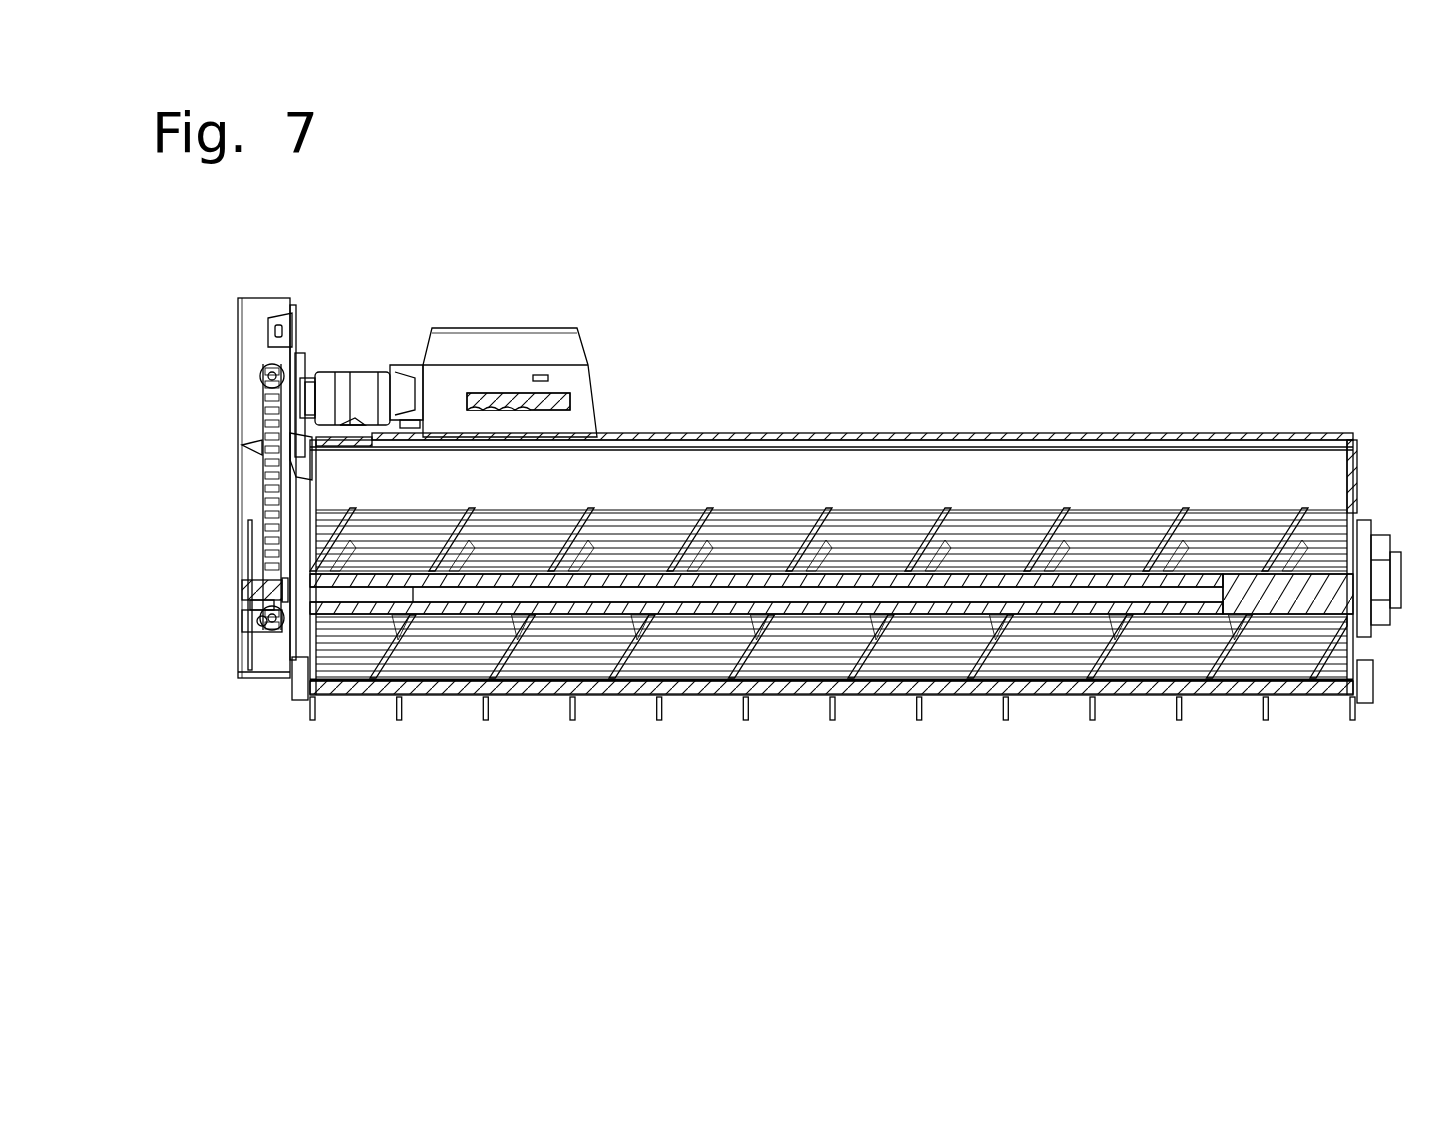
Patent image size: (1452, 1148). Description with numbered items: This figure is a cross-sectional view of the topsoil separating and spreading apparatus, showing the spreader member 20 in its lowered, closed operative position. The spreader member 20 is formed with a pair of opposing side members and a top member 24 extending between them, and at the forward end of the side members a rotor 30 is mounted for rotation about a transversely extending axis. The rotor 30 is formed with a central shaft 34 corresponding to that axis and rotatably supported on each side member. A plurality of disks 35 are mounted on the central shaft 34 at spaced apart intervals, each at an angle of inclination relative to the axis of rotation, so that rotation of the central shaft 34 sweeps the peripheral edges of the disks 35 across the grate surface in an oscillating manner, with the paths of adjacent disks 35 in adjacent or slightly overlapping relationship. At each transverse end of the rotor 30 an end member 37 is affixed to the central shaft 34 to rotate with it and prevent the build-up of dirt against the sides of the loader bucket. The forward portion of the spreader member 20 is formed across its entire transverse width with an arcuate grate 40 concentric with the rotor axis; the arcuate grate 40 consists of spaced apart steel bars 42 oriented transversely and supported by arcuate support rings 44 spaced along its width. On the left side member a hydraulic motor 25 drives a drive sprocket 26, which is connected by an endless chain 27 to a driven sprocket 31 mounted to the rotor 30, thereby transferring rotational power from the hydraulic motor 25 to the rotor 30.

The spreader member 20 is at (688, 800).
The top member 24 is at (733, 437).
The hydraulic motor 25 is at (350, 380).
The drive sprocket 26 is at (268, 393).
The endless chain 27 is at (258, 465).
The rotor 30 is at (1095, 488).
The driven sprocket 31 is at (265, 568).
The central shaft 34 is at (1250, 590).
The disks 35 is at (705, 518).
The end member 37 is at (345, 522).
The arcuate grate 40 is at (555, 668).
The steel bars 42 is at (947, 630).
The arcuate support rings 44 is at (1007, 712).